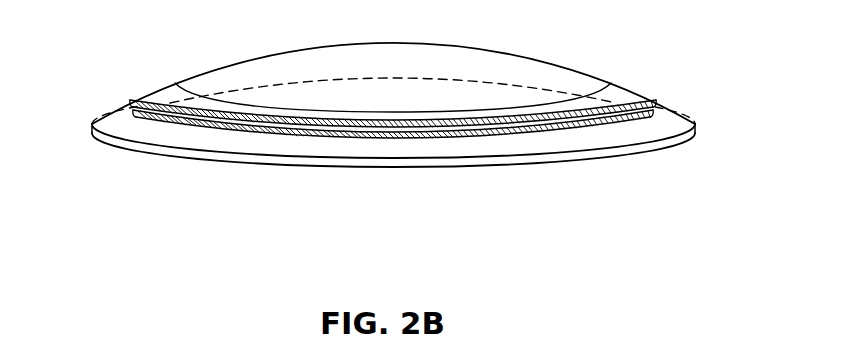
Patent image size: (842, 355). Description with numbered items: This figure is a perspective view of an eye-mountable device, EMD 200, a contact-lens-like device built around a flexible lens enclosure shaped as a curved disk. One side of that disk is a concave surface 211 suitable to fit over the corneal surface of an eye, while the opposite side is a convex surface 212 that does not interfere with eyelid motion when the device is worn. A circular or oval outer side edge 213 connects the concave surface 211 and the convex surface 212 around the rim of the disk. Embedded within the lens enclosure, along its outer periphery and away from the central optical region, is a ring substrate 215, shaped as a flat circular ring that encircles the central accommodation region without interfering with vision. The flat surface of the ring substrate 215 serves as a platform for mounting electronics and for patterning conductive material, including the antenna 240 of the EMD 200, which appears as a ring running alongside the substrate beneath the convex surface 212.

The eye-mountable device 200 is at (176, 45).
The convex surface 212 is at (596, 77).
The ring substrate 215 is at (127, 105).
The antenna 240 is at (650, 98).
The concave surface 211 is at (626, 147).
The outer side edge 213 is at (530, 157).